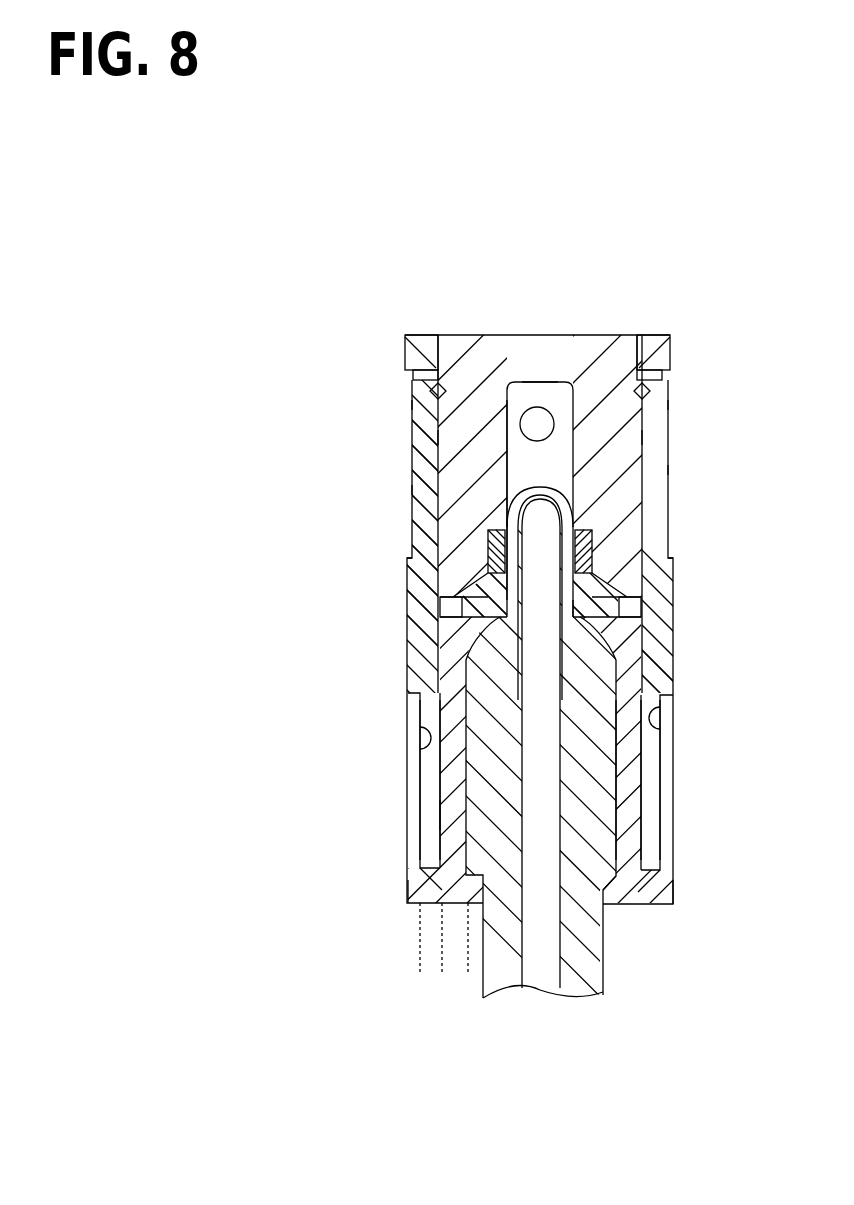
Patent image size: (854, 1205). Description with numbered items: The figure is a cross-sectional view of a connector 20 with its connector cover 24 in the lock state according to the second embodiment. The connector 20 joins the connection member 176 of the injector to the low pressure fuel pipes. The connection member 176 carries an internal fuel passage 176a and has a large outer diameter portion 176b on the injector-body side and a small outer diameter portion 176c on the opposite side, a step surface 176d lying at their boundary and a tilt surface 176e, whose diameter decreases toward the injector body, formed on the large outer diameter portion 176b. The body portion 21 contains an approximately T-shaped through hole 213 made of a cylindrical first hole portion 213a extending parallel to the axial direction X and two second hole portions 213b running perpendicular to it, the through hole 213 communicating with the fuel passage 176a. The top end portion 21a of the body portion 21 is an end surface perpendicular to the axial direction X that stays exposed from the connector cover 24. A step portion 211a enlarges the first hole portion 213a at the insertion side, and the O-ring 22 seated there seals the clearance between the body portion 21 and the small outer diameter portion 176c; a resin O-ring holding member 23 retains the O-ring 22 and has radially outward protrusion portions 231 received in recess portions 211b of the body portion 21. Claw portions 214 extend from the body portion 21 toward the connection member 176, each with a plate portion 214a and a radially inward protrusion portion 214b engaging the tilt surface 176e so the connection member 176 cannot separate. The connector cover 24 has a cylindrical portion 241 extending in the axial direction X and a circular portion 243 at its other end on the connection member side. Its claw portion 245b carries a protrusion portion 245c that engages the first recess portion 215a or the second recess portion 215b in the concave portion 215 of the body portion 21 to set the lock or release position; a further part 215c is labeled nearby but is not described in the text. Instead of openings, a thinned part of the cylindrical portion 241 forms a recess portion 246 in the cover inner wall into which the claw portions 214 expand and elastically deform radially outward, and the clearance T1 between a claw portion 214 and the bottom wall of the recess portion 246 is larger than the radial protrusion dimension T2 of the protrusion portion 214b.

The connector 20 is at (426, 306).
The body portion 21 is at (628, 335).
The top end portion 21a is at (560, 378).
The through hole 213 is at (602, 245).
The first hole portion 213a is at (522, 463).
The second hole portions 213b is at (539, 420).
The concave portion 215 is at (405, 338).
The first recess portion 215a is at (412, 376).
The second recess portion 215b is at (427, 437).
The nut upper surface 215c is at (660, 335).
The claw portion 245b is at (430, 488).
The protrusion portion 245c is at (412, 405).
The O-ring 22 is at (440, 545).
The protrusion portions 231 is at (407, 597).
The step portion 211a is at (640, 563).
The recess portions 211b is at (407, 635).
The O-ring holding member 23 is at (487, 619).
The connector cover 24 is at (407, 692).
The cylindrical portion 241 is at (660, 670).
The recess portion 246 is at (418, 742).
The claw portions 214 is at (440, 770).
The plate portion 214a is at (442, 815).
The protrusion portion 214b is at (437, 858).
The circular portion 243 is at (408, 880).
The connection member 176 is at (603, 963).
The fuel passage 176a is at (548, 836).
The large outer diameter portion 176b is at (600, 755).
The small outer diameter portion 176c is at (592, 534).
The step surface 176d is at (610, 615).
The tilt surface 176e is at (608, 885).
The axial direction X is at (270, 545).
The clearance T1 is at (470, 960).
The protrusion dimension T2 is at (512, 940).